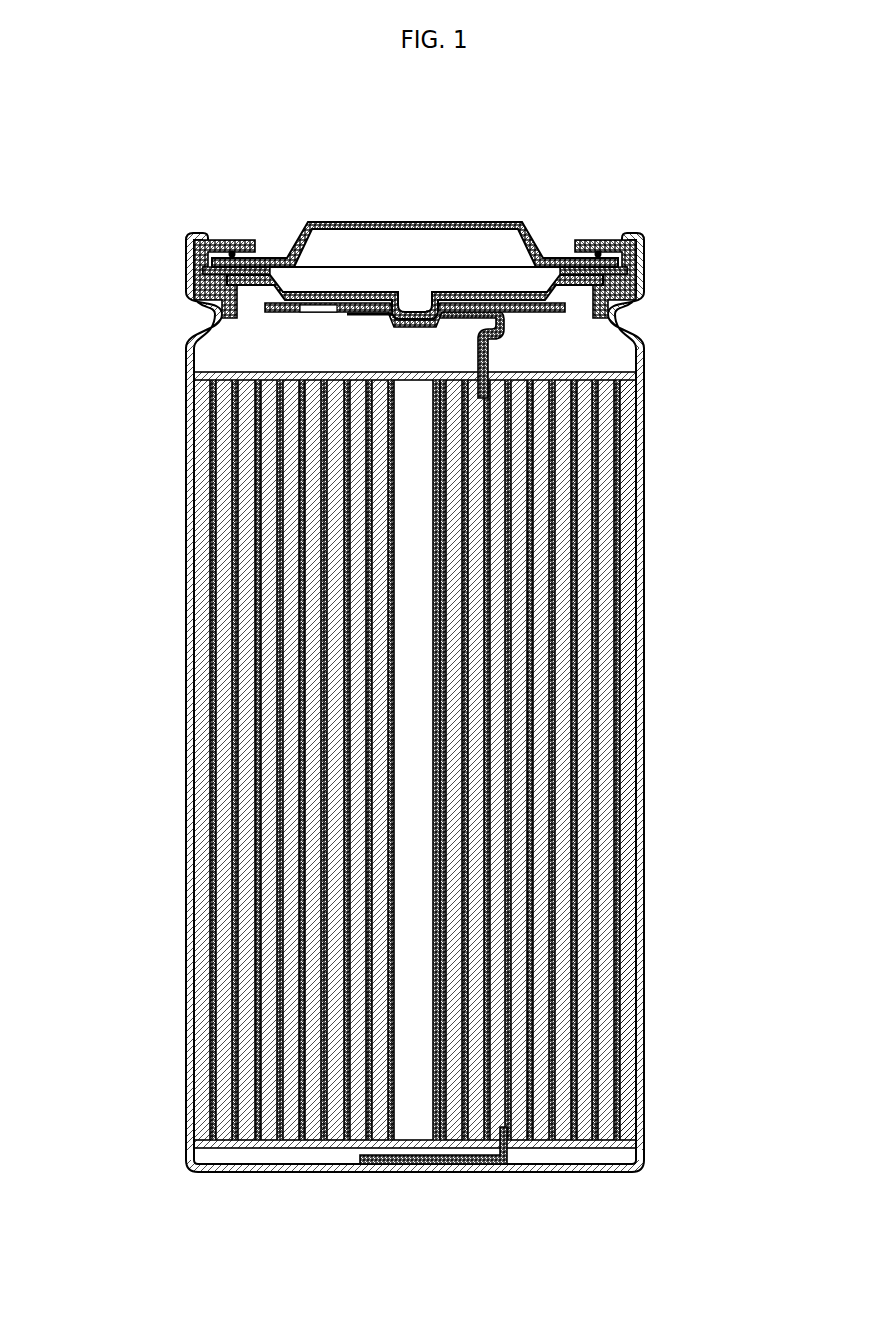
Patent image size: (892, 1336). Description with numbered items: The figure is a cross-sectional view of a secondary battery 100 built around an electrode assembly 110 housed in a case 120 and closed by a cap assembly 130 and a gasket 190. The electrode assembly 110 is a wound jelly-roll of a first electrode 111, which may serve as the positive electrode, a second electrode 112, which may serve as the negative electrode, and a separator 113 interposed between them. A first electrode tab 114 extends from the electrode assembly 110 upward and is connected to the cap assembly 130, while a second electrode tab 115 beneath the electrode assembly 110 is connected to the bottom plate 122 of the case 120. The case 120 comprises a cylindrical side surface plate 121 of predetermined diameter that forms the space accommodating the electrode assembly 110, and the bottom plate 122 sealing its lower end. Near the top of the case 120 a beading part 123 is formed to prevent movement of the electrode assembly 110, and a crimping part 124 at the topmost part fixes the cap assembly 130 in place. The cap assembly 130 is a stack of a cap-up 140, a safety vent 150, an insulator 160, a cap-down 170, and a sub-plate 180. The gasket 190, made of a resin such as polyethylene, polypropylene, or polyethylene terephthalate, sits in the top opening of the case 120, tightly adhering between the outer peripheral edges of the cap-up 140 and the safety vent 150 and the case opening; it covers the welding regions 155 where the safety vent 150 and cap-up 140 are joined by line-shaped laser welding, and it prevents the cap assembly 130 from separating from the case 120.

The secondary battery 100 is at (435, 672).
The electrode assembly 110 is at (484, 760).
The first electrode 111 is at (612, 492).
The second electrode 112 is at (723, 500).
The separator 113 is at (618, 457).
The first electrode tab 114 is at (490, 353).
The second electrode tab 115 is at (461, 1165).
The case 120 is at (465, 737).
The side surface plate 121 is at (648, 966).
The bottom plate 122 is at (540, 1167).
The beading part 123 is at (616, 313).
The crimping part 124 is at (645, 245).
The cap assembly 130 is at (458, 213).
The cap-up 140 is at (442, 221).
The safety vent 150 is at (510, 290).
The welding regions 155 is at (598, 252).
The insulator 160 is at (562, 268).
The cap-down 170 is at (375, 298).
The sub-plate 180 is at (347, 231).
The gasket 190 is at (632, 278).